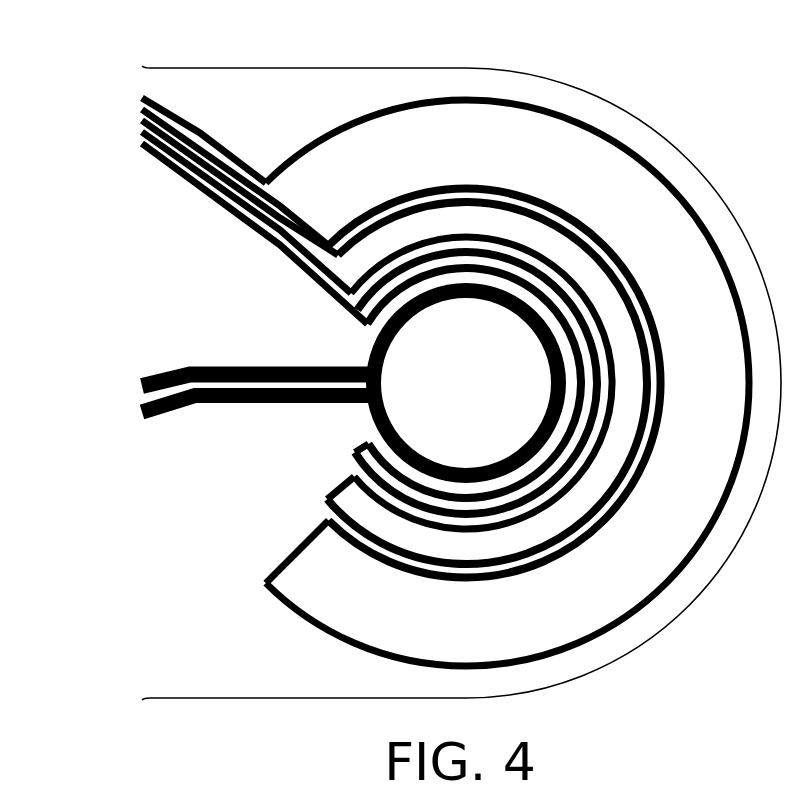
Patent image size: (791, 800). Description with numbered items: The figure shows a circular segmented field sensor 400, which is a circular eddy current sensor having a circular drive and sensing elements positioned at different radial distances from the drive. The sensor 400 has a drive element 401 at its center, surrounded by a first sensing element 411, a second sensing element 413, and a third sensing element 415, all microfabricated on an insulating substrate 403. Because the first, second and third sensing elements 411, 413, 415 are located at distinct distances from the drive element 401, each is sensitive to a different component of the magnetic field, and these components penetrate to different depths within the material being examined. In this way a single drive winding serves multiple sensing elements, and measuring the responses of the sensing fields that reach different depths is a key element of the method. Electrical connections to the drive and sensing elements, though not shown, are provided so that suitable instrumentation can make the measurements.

The sensor 400 is at (708, 133).
The drive element 401 is at (269, 366).
The insulating substrate 403 is at (307, 72).
The first sensing element 411 is at (353, 454).
The second sensing element 413 is at (326, 495).
The third sensing element 415 is at (270, 569).